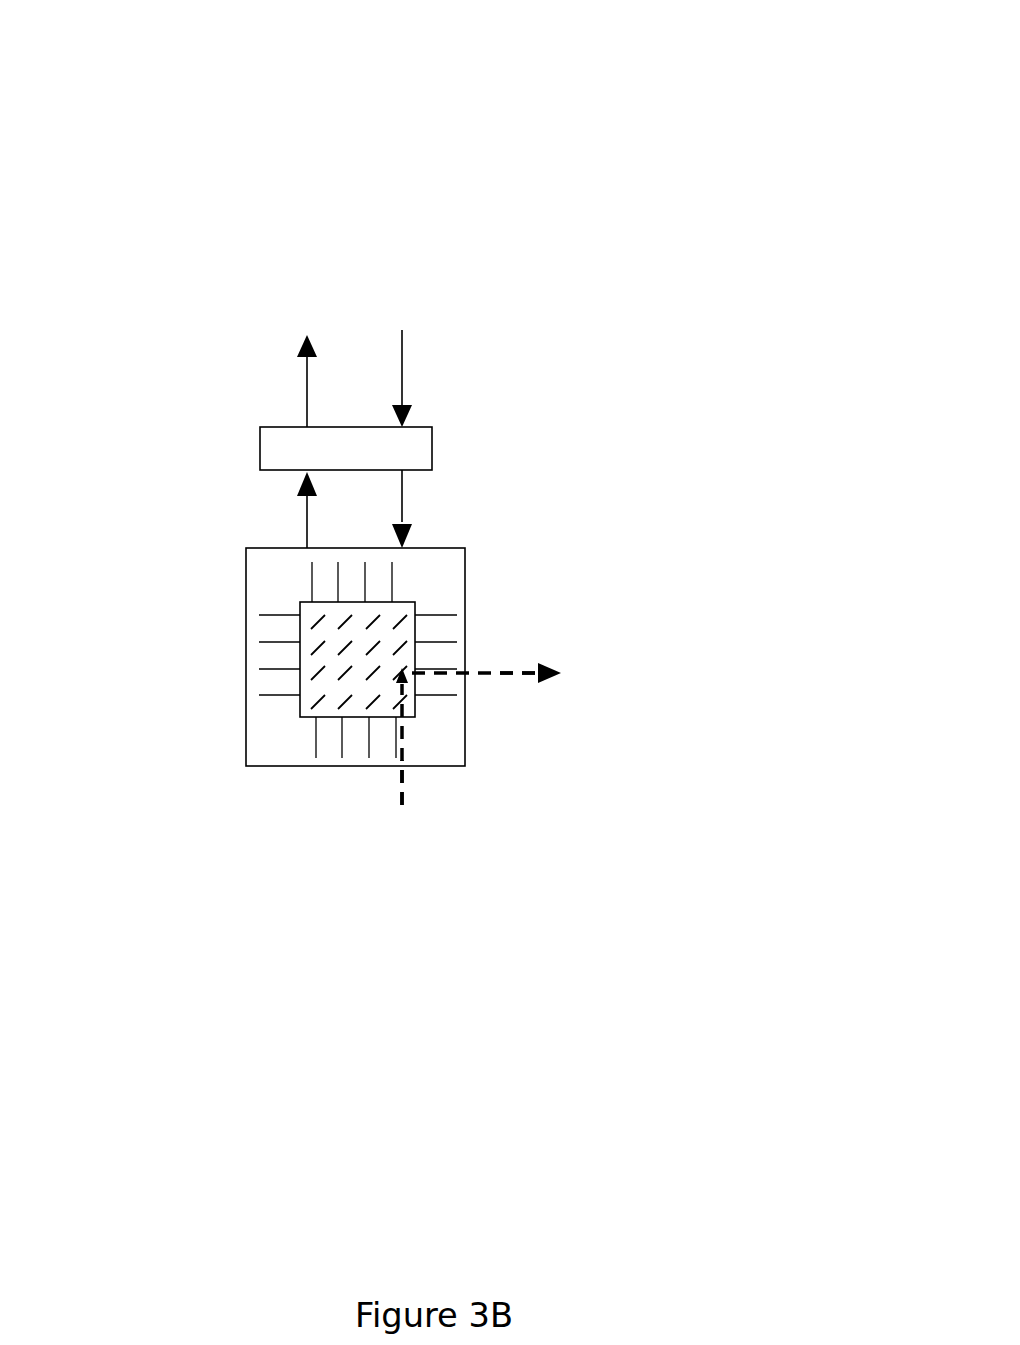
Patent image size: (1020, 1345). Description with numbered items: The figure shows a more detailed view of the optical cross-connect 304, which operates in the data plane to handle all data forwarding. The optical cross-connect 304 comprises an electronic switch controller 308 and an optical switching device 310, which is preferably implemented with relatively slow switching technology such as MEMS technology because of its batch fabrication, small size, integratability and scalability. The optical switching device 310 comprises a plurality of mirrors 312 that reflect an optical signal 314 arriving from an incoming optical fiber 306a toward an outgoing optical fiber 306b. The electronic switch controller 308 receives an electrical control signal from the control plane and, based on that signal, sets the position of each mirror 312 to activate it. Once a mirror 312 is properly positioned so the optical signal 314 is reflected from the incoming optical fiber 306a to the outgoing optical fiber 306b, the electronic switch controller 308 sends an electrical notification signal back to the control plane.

The optical cross-connect (OXC) 304 is at (503, 143).
The electronic switch controller 308 is at (432, 437).
The optical switching device 310 is at (465, 585).
The mirror 312 is at (317, 672).
The incoming optical fiber 306a is at (395, 735).
The outgoing optical fiber 306b is at (445, 668).
The optical signal 314 is at (502, 673).